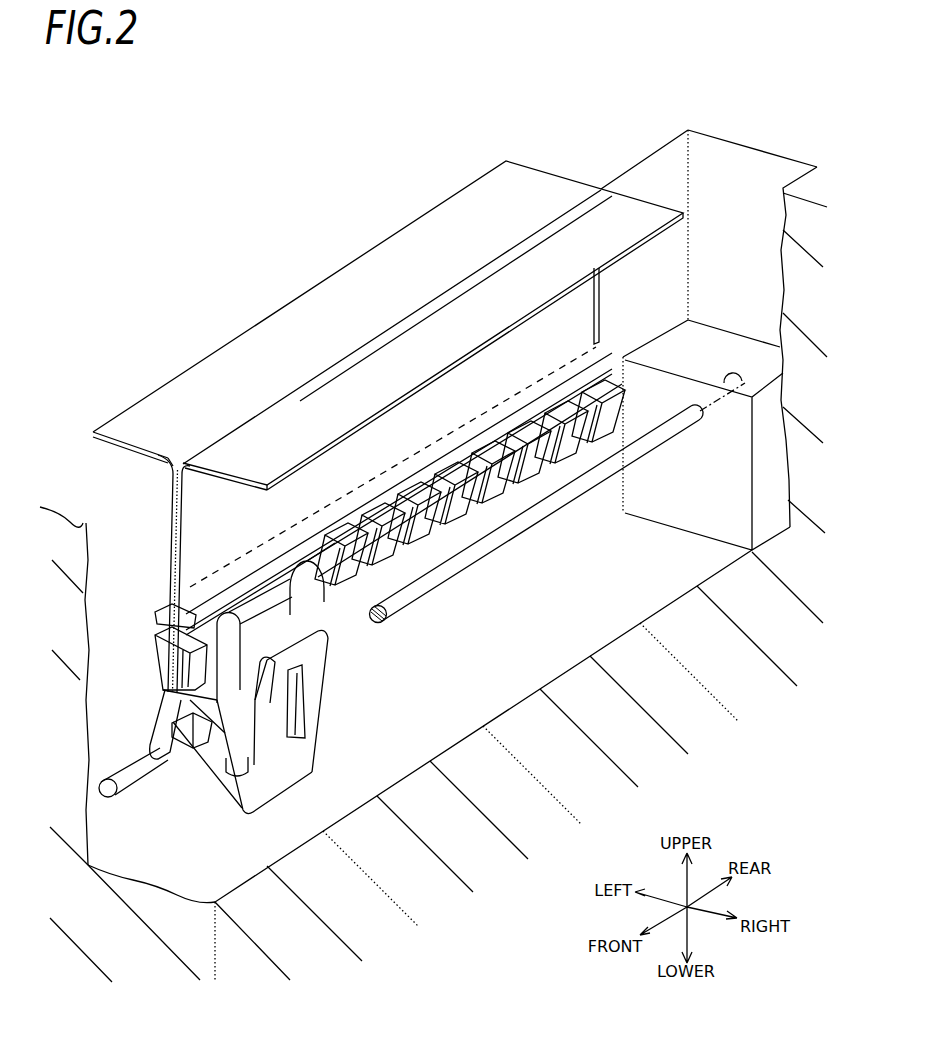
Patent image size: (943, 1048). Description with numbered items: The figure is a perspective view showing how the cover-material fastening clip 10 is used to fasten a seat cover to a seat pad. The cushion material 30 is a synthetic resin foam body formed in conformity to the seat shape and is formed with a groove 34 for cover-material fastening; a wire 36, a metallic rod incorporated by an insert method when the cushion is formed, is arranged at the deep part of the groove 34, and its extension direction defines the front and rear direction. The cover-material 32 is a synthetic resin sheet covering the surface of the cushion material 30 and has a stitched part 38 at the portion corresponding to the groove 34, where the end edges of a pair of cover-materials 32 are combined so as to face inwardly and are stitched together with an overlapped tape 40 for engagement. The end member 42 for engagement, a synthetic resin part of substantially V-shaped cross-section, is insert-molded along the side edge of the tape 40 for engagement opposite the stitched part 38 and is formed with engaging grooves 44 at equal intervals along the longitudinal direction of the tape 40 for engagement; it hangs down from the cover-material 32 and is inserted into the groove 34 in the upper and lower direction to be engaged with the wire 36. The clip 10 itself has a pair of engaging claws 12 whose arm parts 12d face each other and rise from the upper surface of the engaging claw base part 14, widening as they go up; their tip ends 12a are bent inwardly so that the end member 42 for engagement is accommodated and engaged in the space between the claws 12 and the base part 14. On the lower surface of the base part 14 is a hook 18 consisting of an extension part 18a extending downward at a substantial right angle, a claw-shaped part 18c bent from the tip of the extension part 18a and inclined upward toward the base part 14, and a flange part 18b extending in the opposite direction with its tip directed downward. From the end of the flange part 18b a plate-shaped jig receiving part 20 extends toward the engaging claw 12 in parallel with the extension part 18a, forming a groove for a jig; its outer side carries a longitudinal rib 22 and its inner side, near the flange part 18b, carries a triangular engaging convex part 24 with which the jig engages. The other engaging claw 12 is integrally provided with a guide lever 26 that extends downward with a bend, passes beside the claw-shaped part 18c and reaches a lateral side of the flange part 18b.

The cover-material fastening clip 10 is at (240, 830).
The engaging claws 12 is at (268, 640).
The tip ends of the engaging claws 12a is at (287, 622).
The arm parts 12d is at (306, 700).
The engaging claw base part 14 is at (155, 650).
The hook 18 is at (313, 773).
The extension part 18a is at (218, 740).
The flange part 18b is at (230, 793).
The claw-shaped part 18c is at (172, 730).
The jig receiving part 20 is at (290, 660).
The rib 22 is at (318, 728).
The engaging convex part 24 is at (255, 788).
The guide lever 26 is at (166, 697).
The cushion material 30 is at (765, 133).
The cover-material 32 is at (402, 362).
The groove 34 is at (722, 158).
The wire 36 is at (505, 534).
The stitched part 38 is at (238, 547).
The tape for engagement 40 is at (170, 587).
The end member for engagement 42 is at (497, 438).
The engaging grooves 44 is at (564, 400).